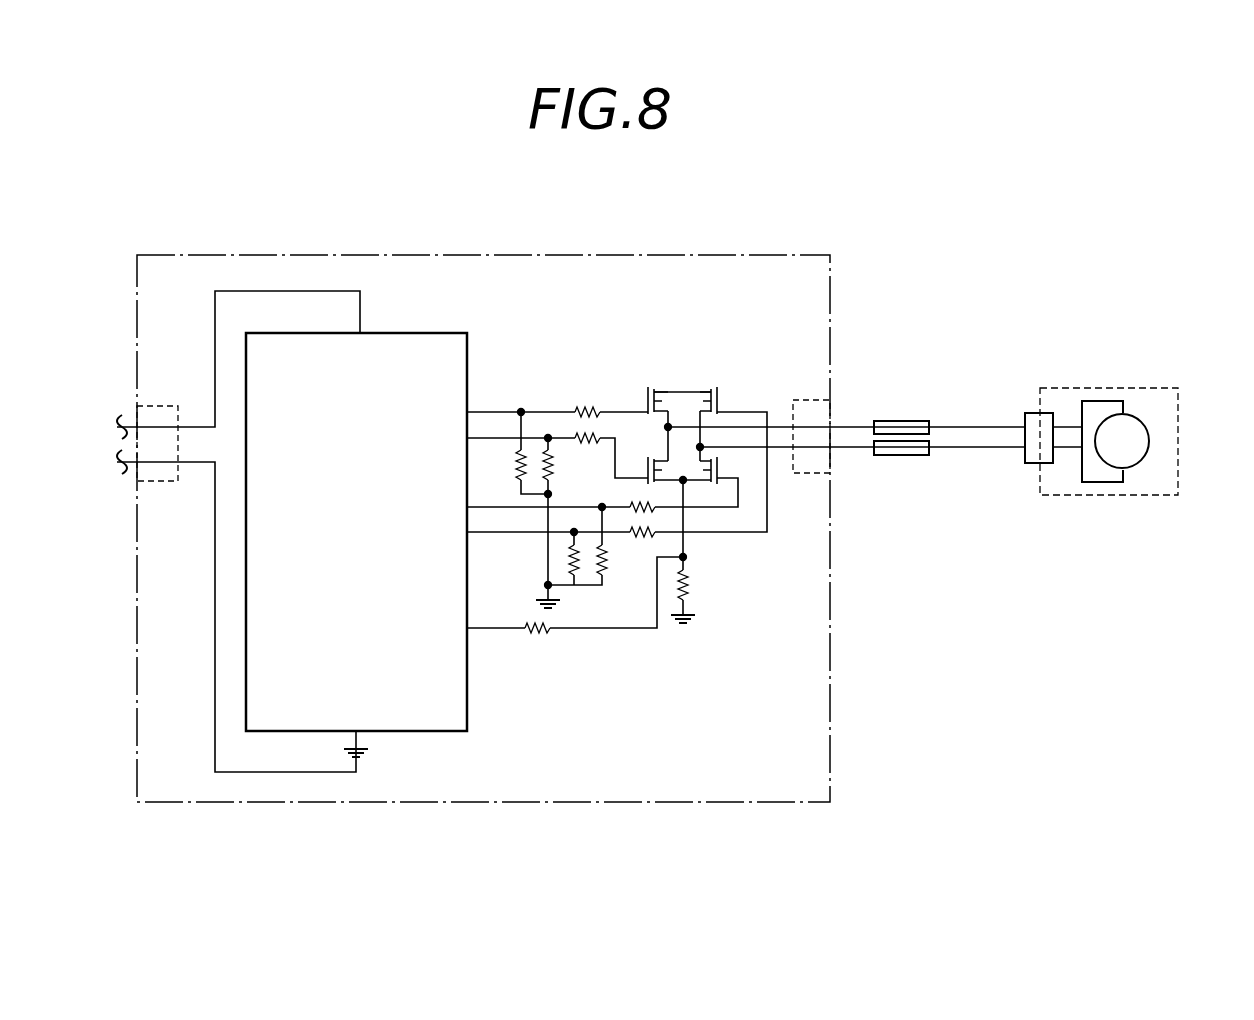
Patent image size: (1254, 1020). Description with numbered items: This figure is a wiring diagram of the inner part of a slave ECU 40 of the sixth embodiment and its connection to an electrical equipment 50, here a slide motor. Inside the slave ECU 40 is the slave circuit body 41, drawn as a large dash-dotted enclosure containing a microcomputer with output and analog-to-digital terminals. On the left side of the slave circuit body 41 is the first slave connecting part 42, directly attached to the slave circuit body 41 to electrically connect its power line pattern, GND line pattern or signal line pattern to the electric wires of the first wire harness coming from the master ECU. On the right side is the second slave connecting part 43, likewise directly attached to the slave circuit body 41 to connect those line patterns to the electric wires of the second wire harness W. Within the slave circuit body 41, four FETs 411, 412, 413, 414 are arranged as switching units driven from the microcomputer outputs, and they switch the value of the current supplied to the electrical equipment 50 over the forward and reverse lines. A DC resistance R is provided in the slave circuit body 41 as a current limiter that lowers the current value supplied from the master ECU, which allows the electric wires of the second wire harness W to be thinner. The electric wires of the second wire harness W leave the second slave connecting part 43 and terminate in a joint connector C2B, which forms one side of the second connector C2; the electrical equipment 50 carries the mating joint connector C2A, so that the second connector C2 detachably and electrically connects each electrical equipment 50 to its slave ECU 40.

The slave ECU 40 is at (875, 212).
The slave circuit body 41 is at (830, 762).
The first slave connecting part 42 is at (165, 406).
The second slave connecting part 43 is at (797, 473).
The FET 411 is at (646, 396).
The FET 412 is at (713, 396).
The FET 413 is at (646, 466).
The FET 414 is at (716, 466).
The electrical equipment 50 is at (1138, 513).
The second wire harness W is at (912, 412).
The second connector C2 is at (1040, 530).
The joint connector C2A is at (1047, 463).
The joint connector C2B is at (1031, 463).
The DC resistance R is at (692, 551).